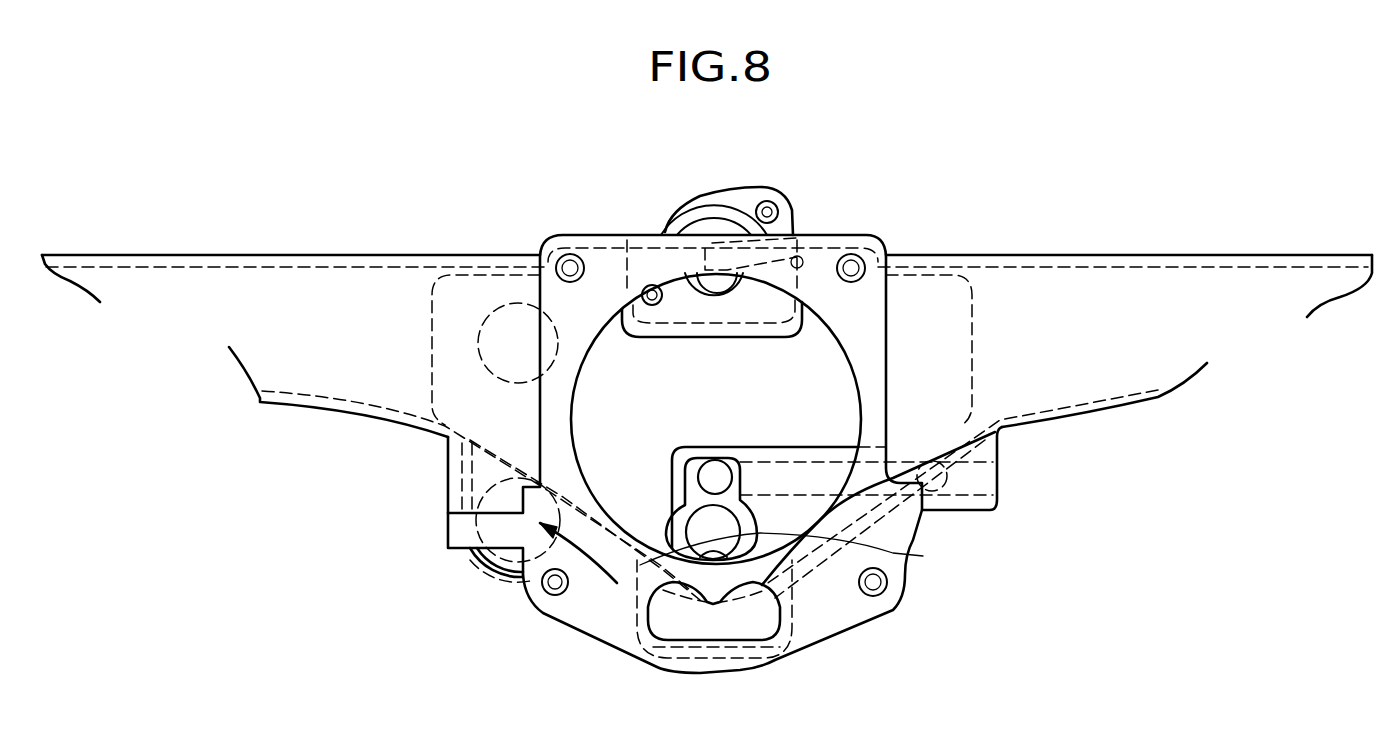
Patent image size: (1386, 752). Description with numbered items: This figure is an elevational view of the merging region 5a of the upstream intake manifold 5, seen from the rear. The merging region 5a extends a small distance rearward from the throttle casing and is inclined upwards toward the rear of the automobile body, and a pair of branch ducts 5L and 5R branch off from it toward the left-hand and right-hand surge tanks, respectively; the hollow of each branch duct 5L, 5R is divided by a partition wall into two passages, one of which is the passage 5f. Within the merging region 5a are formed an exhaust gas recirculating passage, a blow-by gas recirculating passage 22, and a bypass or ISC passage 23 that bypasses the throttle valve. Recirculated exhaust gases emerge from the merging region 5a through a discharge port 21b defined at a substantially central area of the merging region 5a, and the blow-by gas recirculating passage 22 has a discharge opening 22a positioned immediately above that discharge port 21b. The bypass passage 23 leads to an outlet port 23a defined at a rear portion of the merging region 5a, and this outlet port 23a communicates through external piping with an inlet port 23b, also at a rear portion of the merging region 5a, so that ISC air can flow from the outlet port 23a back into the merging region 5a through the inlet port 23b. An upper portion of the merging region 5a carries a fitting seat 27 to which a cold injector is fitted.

The upstream intake manifold 5 is at (838, 223).
The left-hand branch duct 5L is at (268, 255).
The right-hand branch duct 5R is at (1205, 255).
The passage 5f is at (367, 273).
The merging region 5a is at (590, 432).
The fitting seat 27 is at (738, 192).
The blow-by gas recirculating passage 22 is at (820, 346).
The discharge opening 22a is at (717, 475).
The discharge port 21b is at (905, 554).
The bypass passage 23 is at (618, 595).
The outlet port 23a is at (517, 565).
The inlet port 23b is at (490, 303).